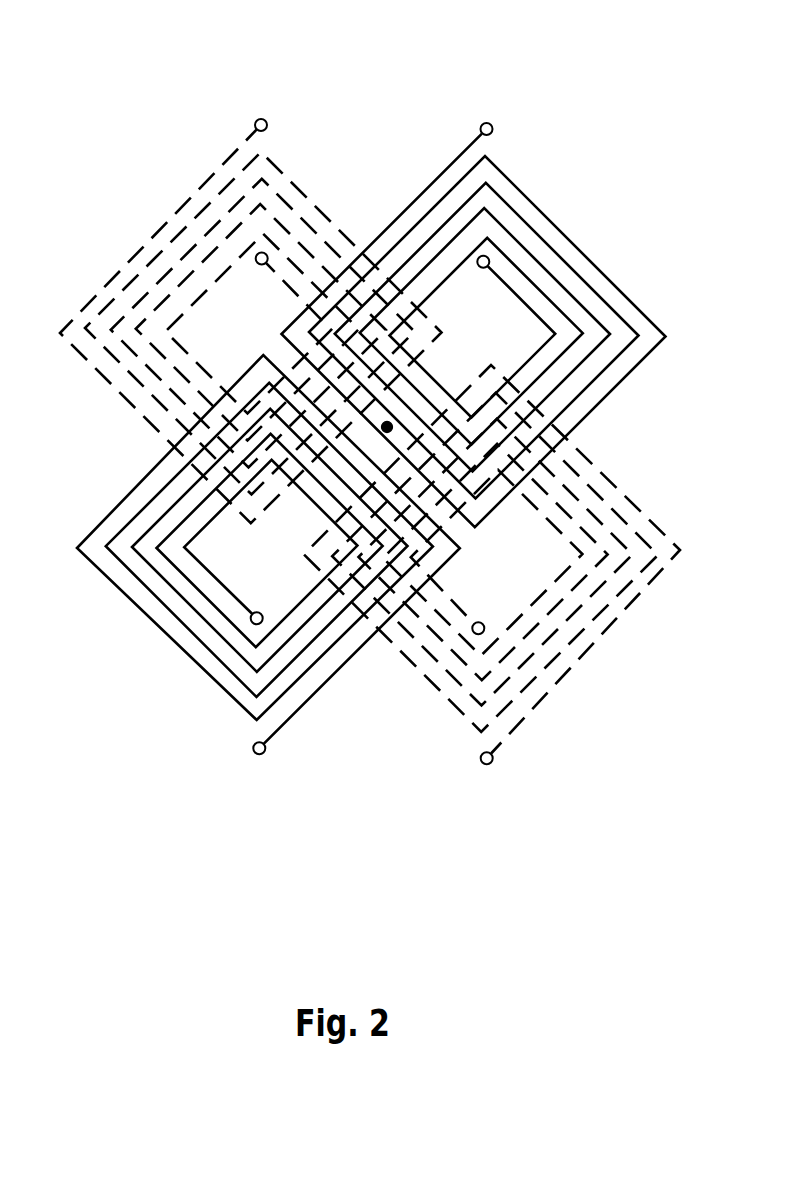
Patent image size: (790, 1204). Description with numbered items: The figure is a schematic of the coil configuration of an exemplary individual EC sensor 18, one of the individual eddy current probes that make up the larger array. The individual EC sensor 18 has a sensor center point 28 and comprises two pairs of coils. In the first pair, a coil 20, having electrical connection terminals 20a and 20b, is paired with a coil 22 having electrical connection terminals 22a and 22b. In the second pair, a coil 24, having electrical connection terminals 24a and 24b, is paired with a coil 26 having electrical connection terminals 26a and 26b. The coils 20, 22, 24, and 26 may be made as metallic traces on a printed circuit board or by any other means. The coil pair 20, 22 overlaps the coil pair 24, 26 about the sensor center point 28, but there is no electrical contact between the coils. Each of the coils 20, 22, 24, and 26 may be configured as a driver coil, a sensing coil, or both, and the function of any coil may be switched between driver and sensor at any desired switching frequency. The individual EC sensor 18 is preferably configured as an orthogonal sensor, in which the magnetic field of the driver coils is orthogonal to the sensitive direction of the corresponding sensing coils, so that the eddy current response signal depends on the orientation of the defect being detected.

The individual EC sensor 18 is at (142, 103).
The coil 20 is at (172, 217).
The electrical connection terminal 20a is at (257, 119).
The electrical connection terminal 20b is at (262, 265).
The coil 22 is at (595, 645).
The electrical connection terminal 22a is at (489, 765).
The electrical connection terminal 22b is at (480, 622).
The coil 24 is at (560, 223).
The electrical connection terminal 24a is at (485, 123).
The electrical connection terminal 24b is at (484, 268).
The coil 26 is at (159, 627).
The electrical connection terminal 26a is at (262, 754).
The electrical connection terminal 26b is at (256, 612).
The sensor center point 28 is at (381, 423).